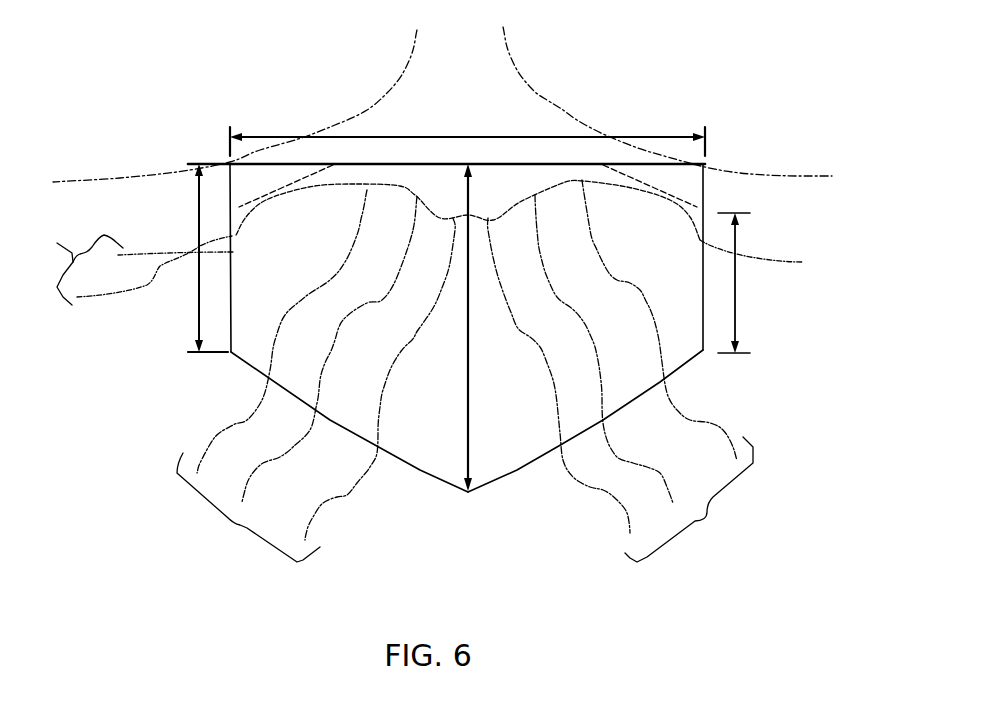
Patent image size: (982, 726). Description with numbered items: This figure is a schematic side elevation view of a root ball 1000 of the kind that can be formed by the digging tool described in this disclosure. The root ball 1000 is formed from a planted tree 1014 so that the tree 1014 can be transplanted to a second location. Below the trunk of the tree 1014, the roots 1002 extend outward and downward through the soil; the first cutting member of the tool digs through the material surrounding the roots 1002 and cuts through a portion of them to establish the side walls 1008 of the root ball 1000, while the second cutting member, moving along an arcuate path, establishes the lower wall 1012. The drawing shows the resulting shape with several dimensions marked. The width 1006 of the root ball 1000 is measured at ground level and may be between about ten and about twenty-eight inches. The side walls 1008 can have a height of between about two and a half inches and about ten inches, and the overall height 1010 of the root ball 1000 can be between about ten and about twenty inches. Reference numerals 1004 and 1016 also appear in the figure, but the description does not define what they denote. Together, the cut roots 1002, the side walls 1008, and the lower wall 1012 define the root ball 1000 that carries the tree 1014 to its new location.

The root ball 1000 is at (273, 258).
The roots 1002 is at (725, 532).
The height dimension 1004 is at (195, 218).
The width 1006 is at (462, 135).
The side walls 1008 is at (736, 285).
The overall height 1010 is at (469, 372).
The lower wall 1012 is at (508, 478).
The tree 1014 is at (547, 98).
The rear contour line 1016 is at (770, 174).